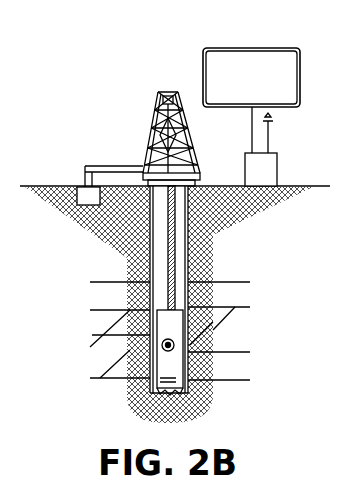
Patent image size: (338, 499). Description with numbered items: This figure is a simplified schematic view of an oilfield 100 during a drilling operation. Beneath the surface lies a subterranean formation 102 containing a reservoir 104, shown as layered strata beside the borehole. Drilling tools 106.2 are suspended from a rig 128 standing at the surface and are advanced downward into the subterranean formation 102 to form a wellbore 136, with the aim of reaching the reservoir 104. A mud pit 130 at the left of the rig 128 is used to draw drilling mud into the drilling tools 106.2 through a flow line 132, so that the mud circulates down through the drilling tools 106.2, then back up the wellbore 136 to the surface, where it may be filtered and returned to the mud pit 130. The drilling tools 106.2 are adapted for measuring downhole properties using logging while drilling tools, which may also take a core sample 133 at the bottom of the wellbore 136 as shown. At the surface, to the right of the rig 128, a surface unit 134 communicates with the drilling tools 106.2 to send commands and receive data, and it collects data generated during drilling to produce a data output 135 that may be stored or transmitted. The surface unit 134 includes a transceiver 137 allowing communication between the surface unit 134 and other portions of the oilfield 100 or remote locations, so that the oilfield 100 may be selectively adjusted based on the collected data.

The oilfield 100 is at (90, 96).
The subterranean formation 102 is at (262, 273).
The reservoir 104 is at (298, 343).
The drilling tools 106.2 is at (155, 335).
The rig 128 is at (152, 132).
The mud pit 130 is at (88, 206).
The flow line 132 is at (85, 169).
The core sample 133 is at (150, 393).
The surface unit 134 is at (277, 170).
The data output 135 is at (270, 48).
The wellbore 136 is at (205, 289).
The transceiver 137 is at (272, 137).